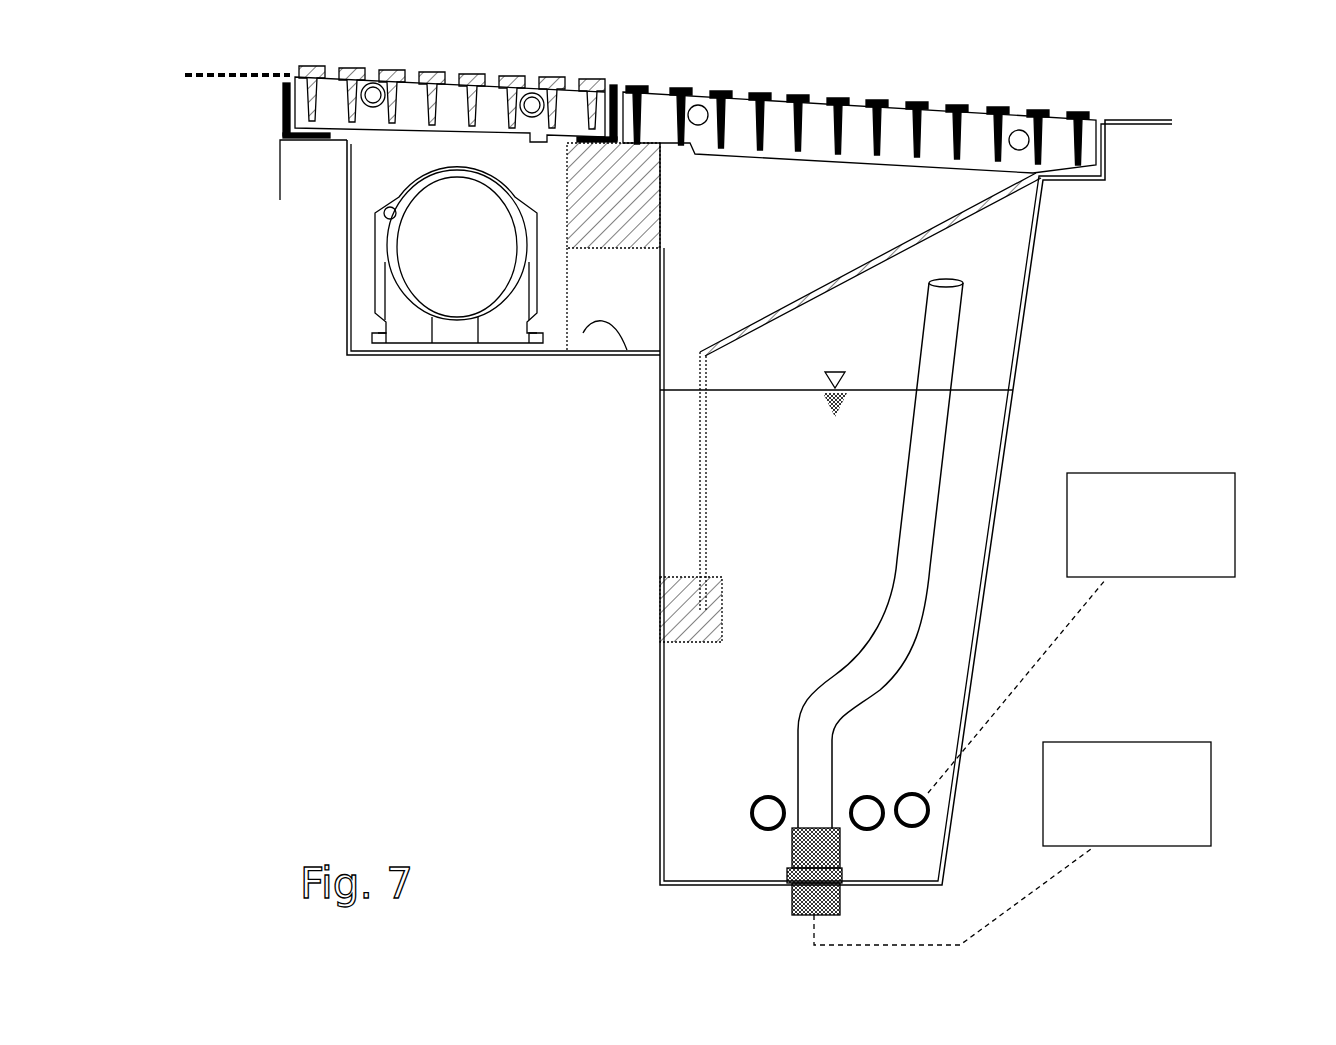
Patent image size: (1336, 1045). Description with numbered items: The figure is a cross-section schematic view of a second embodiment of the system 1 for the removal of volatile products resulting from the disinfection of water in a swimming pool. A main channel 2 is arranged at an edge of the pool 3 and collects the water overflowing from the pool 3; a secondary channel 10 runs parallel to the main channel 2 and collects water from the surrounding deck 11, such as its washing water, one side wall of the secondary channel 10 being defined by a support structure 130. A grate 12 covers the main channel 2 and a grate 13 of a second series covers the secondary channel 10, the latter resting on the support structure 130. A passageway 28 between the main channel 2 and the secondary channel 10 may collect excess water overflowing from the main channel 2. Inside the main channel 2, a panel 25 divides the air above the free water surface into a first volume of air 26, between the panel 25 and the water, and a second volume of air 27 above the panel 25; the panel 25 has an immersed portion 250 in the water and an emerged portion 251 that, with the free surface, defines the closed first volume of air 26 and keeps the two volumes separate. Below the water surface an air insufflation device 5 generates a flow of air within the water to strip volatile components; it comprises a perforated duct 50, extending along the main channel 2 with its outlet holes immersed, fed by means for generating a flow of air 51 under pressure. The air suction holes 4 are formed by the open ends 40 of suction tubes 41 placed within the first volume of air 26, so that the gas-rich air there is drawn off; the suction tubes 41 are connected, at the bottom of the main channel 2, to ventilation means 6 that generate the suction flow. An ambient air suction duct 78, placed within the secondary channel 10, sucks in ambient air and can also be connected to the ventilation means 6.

The system for the removal of products resulting from the disinfection of water 1 is at (378, 626).
The main channel 2 is at (700, 725).
The pool 3 is at (1103, 332).
The air suction holes 4 is at (957, 525).
The open ends 40 is at (956, 282).
The suction tubes 41 is at (927, 442).
The air insufflation device 5 is at (740, 824).
The ventilation means 6 is at (1126, 777).
The secondary channel 10 is at (357, 273).
The deck 11 is at (237, 98).
The grate 12 is at (935, 131).
The grate 13 is at (490, 103).
The panel 25 is at (820, 285).
The first volume of air 26 is at (815, 341).
The second volume of air 27 is at (847, 205).
The passageway 28 is at (583, 333).
The perforated duct 50 is at (930, 818).
The means for generating a flow of air under pressure 51 is at (1150, 503).
The ambient air suction duct 78 is at (470, 172).
The support structure 130 is at (345, 225).
The immersed portion 250 is at (707, 482).
The emerged portion 251 is at (870, 265).